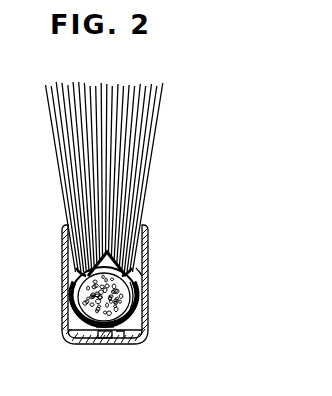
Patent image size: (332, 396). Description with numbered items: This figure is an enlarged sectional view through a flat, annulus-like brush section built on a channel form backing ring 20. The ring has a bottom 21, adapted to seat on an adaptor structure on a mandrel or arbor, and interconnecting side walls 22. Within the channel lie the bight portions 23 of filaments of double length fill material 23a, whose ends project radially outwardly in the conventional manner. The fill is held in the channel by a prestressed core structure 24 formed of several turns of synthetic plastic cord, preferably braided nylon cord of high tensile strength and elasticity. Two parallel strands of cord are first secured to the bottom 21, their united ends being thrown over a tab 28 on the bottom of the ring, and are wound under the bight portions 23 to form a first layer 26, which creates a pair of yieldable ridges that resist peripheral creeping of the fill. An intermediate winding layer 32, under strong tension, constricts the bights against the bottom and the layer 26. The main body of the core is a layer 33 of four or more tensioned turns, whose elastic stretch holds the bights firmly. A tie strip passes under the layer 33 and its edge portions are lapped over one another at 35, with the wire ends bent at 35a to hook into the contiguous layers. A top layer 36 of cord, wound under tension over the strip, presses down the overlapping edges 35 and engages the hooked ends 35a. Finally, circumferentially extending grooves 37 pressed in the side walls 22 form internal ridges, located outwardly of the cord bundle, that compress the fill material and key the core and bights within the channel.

The channel form backing ring 20 is at (112, 227).
The bottom 21 is at (100, 339).
The side walls 22 is at (143, 232).
The bight portions 23 is at (132, 227).
The double length fill material 23a is at (152, 152).
The prestressed core structure 24 is at (138, 287).
The first layer 26 is at (120, 341).
The tab 28 is at (148, 326).
The intermediate winding layer 32 is at (76, 328).
The layer 33 is at (140, 298).
The overlapping edge portions 35 is at (72, 292).
The bent wire ends 35a is at (78, 271).
The top layer 36 is at (122, 264).
The circumferentially extending grooves 37 is at (140, 273).